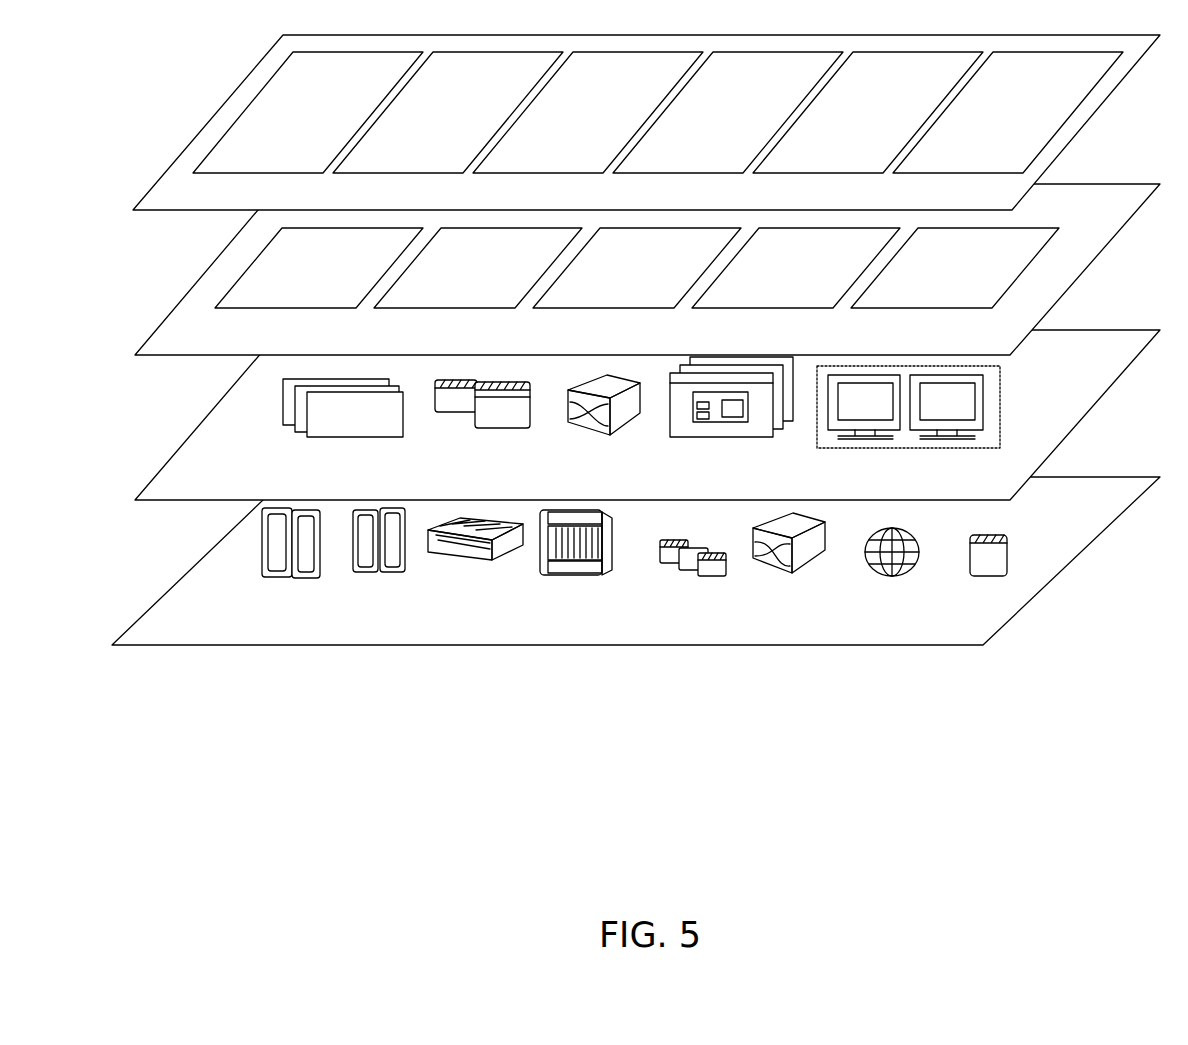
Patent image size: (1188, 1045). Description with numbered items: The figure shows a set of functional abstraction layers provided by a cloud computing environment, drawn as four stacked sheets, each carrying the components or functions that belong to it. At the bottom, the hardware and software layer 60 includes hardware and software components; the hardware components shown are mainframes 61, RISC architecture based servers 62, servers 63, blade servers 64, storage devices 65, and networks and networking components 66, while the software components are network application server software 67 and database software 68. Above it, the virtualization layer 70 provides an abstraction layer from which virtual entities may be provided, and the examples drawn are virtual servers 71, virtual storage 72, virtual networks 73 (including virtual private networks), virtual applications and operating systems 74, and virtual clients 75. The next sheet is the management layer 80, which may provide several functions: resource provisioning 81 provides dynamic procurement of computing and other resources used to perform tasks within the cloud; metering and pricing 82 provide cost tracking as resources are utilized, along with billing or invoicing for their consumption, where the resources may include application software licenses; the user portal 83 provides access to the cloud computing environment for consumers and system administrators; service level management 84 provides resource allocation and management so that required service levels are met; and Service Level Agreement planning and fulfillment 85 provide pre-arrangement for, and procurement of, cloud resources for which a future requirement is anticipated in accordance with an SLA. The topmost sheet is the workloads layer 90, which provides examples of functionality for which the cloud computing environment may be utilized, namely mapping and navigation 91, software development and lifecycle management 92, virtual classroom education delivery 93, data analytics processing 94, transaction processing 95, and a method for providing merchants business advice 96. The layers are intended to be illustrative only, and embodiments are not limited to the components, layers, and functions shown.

The hardware and software layer 60 is at (186, 645).
The mainframes 61 is at (291, 578).
The RISC architecture based servers 62 is at (393, 572).
The servers 63 is at (485, 560).
The blade servers 64 is at (585, 575).
The storage devices 65 is at (690, 576).
The networks and networking components 66 is at (789, 575).
The network application server software 67 is at (894, 578).
The database software 68 is at (996, 578).
The virtualization layer 70 is at (186, 500).
The virtual servers 71 is at (363, 437).
The virtual storage 72 is at (513, 428).
The virtual networks 73 is at (612, 437).
The virtual applications and operating systems 74 is at (730, 437).
The virtual clients 75 is at (914, 449).
The management layer 80 is at (186, 355).
The resource provisioning 81 is at (309, 280).
The metering and pricing 82 is at (468, 280).
The user portal 83 is at (627, 280).
The service level management 84 is at (786, 280).
The Service Level Agreement (SLA) planning and fulfillment 85 is at (945, 280).
The workloads layer 90 is at (186, 210).
The mapping and navigation 91 is at (295, 118).
The software development and lifecycle management 92 is at (435, 118).
The virtual classroom education delivery 93 is at (575, 118).
The data analytics processing 94 is at (715, 118).
The transaction processing 95 is at (855, 118).
The method for providing merchants business advice 96 is at (995, 118).